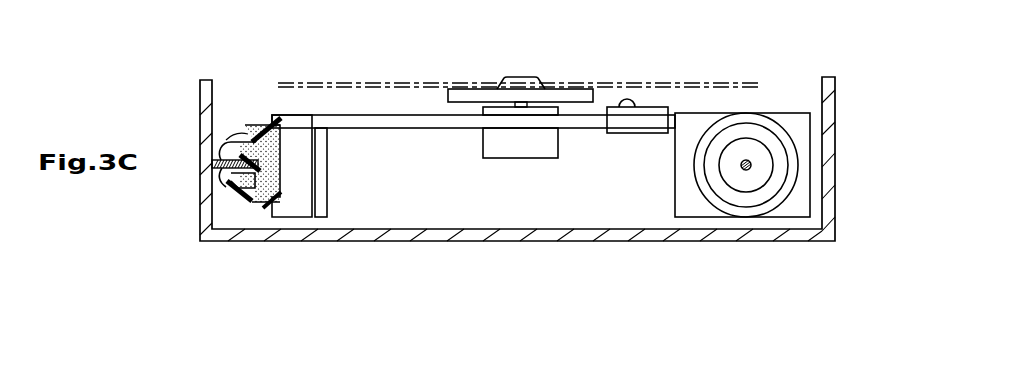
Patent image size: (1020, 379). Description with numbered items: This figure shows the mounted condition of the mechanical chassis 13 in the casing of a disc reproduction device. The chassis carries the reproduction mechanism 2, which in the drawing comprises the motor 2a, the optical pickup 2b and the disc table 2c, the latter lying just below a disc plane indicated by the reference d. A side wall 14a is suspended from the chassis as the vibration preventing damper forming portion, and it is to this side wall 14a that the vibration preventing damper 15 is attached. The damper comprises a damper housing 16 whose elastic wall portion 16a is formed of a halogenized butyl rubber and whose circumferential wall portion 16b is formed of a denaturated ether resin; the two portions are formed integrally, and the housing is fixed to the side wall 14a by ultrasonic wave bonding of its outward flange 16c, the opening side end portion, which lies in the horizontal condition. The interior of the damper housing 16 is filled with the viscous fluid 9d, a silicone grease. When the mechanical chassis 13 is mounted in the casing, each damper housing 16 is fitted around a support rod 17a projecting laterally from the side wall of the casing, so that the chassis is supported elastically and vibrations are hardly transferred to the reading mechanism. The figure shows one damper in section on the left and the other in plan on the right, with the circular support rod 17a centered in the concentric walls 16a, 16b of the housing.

The reproduction mechanism 2 is at (558, 197).
The motor 2a is at (530, 158).
The optical pickup 2b is at (637, 133).
The disc table 2c is at (577, 102).
The viscous fluid 9d is at (229, 128).
The mechanical chassis 13 is at (698, 106).
The side wall 14a is at (327, 165).
The vibration preventing damper 15 is at (234, 133).
The damper housing 16 is at (536, 168).
The elastic wall portion 16a is at (223, 210).
The circumferential wall portion 16b is at (262, 212).
The outward flange 16c is at (255, 135).
The support rod 17a is at (214, 160).
The disc reference plane d is at (403, 80).